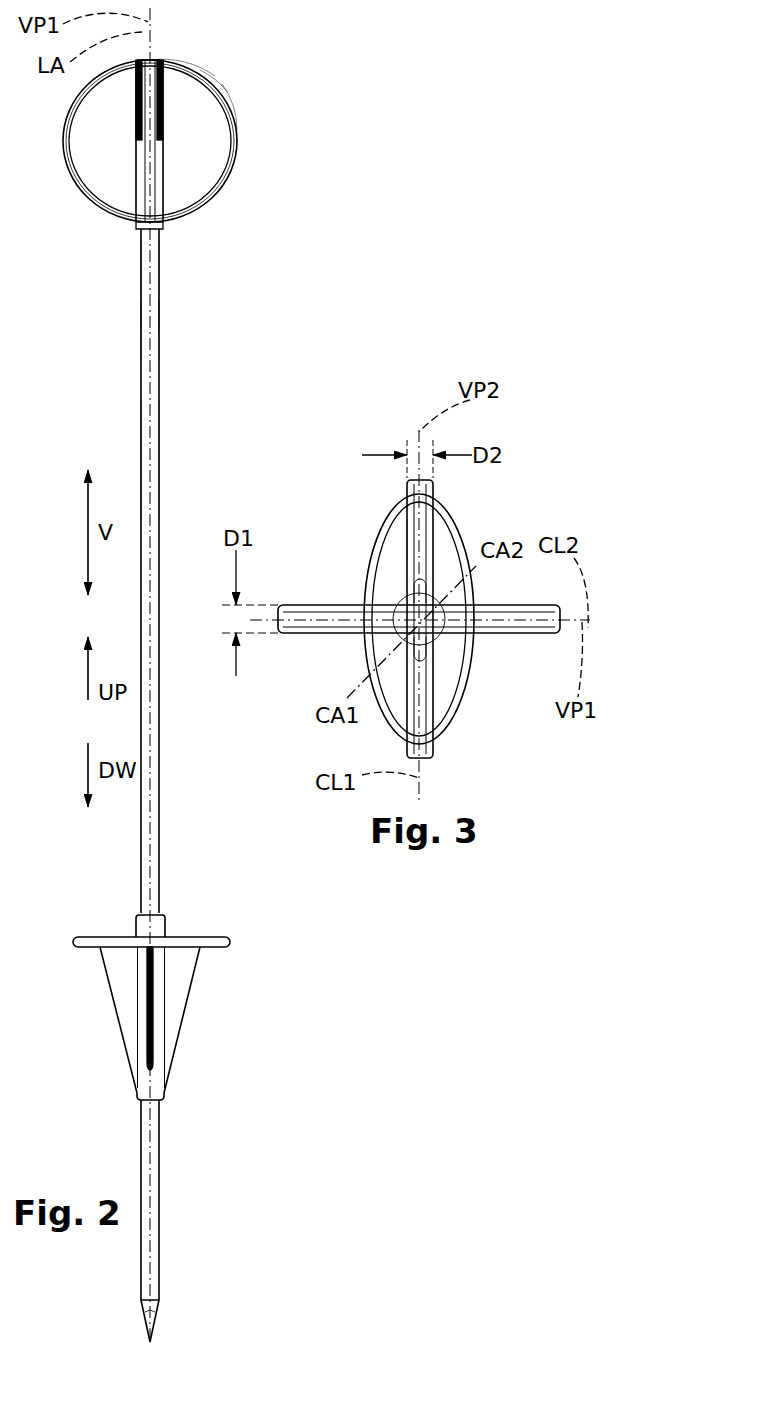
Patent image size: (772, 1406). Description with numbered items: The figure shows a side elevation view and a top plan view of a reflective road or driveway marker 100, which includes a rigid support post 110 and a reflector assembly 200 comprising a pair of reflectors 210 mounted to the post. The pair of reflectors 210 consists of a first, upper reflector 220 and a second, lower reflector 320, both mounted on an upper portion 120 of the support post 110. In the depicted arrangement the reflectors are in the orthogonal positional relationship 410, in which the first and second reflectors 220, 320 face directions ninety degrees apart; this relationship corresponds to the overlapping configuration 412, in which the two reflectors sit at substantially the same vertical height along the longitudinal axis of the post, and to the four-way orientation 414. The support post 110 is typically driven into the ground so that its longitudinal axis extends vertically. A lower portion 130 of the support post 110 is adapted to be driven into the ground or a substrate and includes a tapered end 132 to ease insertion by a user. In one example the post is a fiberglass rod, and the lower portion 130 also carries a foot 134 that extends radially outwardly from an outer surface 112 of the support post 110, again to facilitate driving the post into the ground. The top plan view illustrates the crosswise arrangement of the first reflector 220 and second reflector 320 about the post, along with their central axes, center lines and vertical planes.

In FIG. 2, the road or driveway marker 100 is at (202, 328).
In FIG. 3, the road or driveway marker 100 is at (541, 507).
In FIG. 2, the support post 110 is at (165, 383).
In FIG. 2, the outer surface 112 is at (152, 460).
In FIG. 2, the upper portion 120 is at (152, 300).
In FIG. 2, the lower portion 130 is at (153, 1148).
In FIG. 2, the tapered end 132 is at (159, 1308).
In FIG. 2, the foot 134 is at (202, 942).
In FIG. 3, the foot 134 is at (440, 685).
In FIG. 2, the reflector assembly 200 is at (249, 128).
In FIG. 2, the pair of reflectors 210 is at (249, 163).
In FIG. 2, the first reflector 220 is at (155, 60).
In FIG. 3, the first reflector 220 is at (492, 617).
In FIG. 2, the second reflector 320 is at (186, 118).
In FIG. 3, the second reflector 320 is at (423, 535).
In FIG. 2, the orthogonal positional relationship 410 is at (207, 58).
In FIG. 2, the overlapping configuration 412 is at (232, 69).
In FIG. 2, the four-way orientation 414 is at (252, 78).